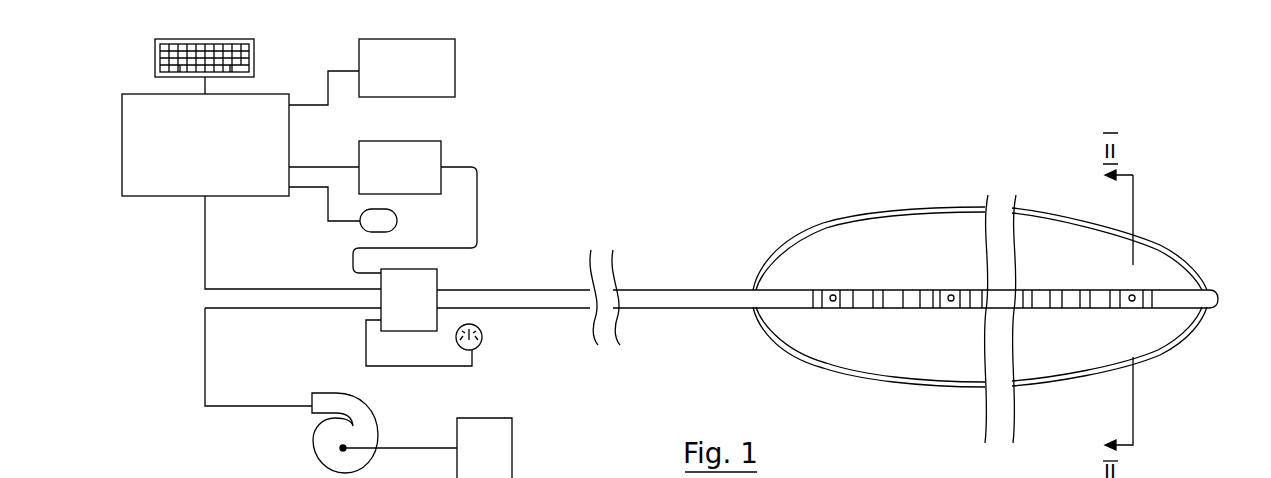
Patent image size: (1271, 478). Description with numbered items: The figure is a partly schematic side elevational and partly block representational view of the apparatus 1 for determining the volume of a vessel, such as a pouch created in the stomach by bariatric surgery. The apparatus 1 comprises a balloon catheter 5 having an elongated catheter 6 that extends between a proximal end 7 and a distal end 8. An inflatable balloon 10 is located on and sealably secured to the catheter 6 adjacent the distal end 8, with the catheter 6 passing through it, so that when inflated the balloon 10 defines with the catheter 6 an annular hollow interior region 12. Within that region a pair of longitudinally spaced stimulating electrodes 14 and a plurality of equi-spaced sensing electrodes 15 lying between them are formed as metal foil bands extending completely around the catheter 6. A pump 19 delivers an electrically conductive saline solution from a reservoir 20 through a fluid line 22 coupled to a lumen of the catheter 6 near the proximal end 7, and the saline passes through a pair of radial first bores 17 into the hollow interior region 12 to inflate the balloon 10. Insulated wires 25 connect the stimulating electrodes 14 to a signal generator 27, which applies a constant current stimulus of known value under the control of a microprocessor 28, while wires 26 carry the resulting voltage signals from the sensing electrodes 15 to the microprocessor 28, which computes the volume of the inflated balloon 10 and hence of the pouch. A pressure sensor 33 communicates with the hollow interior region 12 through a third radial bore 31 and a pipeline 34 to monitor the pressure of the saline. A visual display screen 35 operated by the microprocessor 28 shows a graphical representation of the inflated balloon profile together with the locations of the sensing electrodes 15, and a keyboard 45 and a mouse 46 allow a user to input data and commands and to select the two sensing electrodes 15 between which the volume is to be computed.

The apparatus 1 is at (185, 412).
The balloon catheter 5 is at (782, 133).
The catheter 6 is at (668, 300).
The proximal end 7 is at (460, 290).
The distal end 8 is at (1222, 290).
The inflatable balloon 10 is at (953, 205).
The annular hollow interior region 12 is at (935, 360).
The stimulating electrodes 14 is at (818, 290).
The sensing electrodes 15 is at (908, 290).
The first bores 17 is at (833, 302).
The pump 19 is at (323, 452).
The reservoir 20 is at (493, 445).
The fluid line 22 is at (270, 308).
The wires 25 is at (478, 208).
The wires 26 is at (200, 255).
The signal generator 27 is at (430, 166).
The microprocessor 28 is at (172, 174).
The third radial bore 31 is at (951, 302).
The pressure sensor 33 is at (481, 338).
The pipeline 34 is at (400, 366).
The visual display screen 35 is at (457, 53).
The keyboard 45 is at (254, 57).
The mouse 46 is at (385, 221).